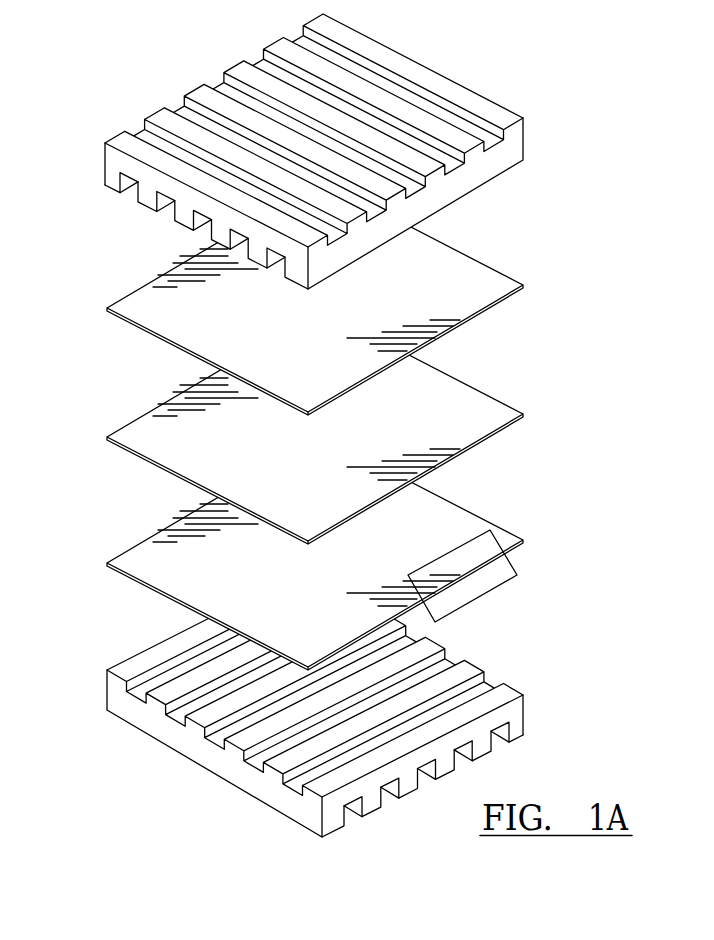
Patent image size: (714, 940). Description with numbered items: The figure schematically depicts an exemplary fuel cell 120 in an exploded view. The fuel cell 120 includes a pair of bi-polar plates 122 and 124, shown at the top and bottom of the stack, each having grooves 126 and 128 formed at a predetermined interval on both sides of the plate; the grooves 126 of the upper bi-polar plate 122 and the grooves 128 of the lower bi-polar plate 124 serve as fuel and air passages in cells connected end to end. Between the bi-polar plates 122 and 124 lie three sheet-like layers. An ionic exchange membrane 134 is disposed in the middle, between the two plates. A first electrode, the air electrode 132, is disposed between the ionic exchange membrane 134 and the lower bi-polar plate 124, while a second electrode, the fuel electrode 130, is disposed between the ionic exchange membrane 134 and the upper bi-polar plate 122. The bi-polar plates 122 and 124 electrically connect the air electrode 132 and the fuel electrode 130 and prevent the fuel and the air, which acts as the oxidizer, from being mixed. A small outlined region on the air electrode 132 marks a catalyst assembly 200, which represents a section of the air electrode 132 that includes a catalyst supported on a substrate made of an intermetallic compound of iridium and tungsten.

The fuel cell 120 is at (323, 429).
The bi-polar plate 122 is at (348, 151).
The bi-polar plate 124 is at (364, 706).
The grooves 126 is at (137, 183).
The grooves 128 is at (294, 776).
The fuel electrode 130 is at (488, 263).
The air electrode 132 is at (468, 510).
The ionic exchange membrane 134 is at (482, 390).
The catalyst assembly 200 is at (518, 574).